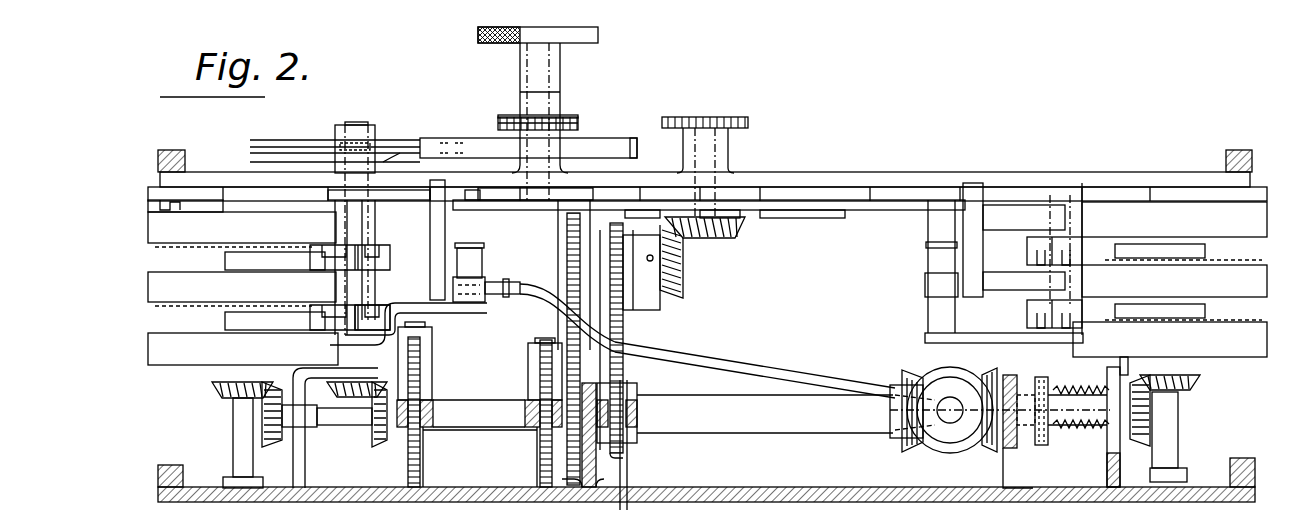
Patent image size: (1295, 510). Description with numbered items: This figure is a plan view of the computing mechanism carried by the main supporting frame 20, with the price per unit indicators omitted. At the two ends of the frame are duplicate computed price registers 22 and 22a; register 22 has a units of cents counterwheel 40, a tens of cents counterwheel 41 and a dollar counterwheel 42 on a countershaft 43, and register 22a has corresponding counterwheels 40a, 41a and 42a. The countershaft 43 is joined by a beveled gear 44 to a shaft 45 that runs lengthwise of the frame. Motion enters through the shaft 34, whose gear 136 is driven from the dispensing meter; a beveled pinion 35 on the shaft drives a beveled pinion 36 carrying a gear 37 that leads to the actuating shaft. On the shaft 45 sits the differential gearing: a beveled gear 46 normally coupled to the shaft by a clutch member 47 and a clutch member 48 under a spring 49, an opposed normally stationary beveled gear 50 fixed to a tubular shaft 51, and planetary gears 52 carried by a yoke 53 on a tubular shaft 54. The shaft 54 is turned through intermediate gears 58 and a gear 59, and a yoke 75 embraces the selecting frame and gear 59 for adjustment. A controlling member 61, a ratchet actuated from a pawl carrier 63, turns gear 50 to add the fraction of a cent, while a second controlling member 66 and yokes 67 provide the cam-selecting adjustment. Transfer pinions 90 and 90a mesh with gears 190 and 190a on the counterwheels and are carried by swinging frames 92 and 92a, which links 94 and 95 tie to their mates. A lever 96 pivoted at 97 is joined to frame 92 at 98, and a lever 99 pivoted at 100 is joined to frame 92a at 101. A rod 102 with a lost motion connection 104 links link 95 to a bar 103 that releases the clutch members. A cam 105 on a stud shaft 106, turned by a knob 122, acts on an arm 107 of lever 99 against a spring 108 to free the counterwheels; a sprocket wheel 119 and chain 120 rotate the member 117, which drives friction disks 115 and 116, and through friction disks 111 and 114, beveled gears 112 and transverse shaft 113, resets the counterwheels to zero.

The main supporting frame 20 is at (850, 173).
The computed price register 22 is at (1240, 362).
The computed price register 22a is at (192, 366).
The shaft 34 is at (728, 153).
The beveled pinion 35 is at (735, 237).
The beveled pinion 36 is at (682, 292).
The gear 37 is at (567, 226).
The counterwheel 40 is at (1267, 357).
The counterwheel 40a is at (148, 212).
The counterwheel 41 is at (1262, 270).
The counterwheel 41a is at (150, 290).
The counterwheel 42 is at (1262, 210).
The counterwheel 42a is at (150, 340).
The countershaft 43 is at (237, 447).
The beveled gear 44 is at (262, 405).
The shaft 45 is at (332, 426).
The beveled gear 46 is at (985, 452).
The clutch member 47 is at (1008, 375).
The clutch member 48 is at (1040, 377).
The spring 49 is at (1095, 430).
The beveled gear 50 is at (898, 404).
The tubular shaft 51 is at (482, 412).
The planetary gears 52 is at (948, 368).
The yoke 53 is at (890, 438).
The tubular shaft 54 is at (765, 414).
The intermediate gears 58 is at (623, 300).
The gear 59 is at (628, 453).
The controlling member 61 is at (528, 355).
The pawl carrier 63 is at (424, 455).
The controlling member 66 is at (420, 371).
The yoke 67 is at (433, 383).
The yoke 75 is at (637, 412).
The transfer pinions 90 is at (1027, 314).
The transfer pinions 90a is at (385, 308).
The swinging frame 92 is at (925, 338).
The swinging frame 92a is at (455, 315).
The link 94 is at (925, 288).
The link 95 is at (485, 302).
The lever 96 is at (845, 211).
The pivot 97 is at (782, 211).
The connection 98 is at (928, 308).
The lever 99 is at (456, 240).
The pivot 100 is at (643, 210).
The pivotal connection 101 is at (483, 264).
The rod 102 is at (762, 368).
The bar 103 is at (1060, 378).
The lost motion connection 104 is at (512, 287).
The cam 105 is at (588, 187).
The stud shaft 106 is at (555, 70).
The arm 107 is at (478, 188).
The spring 108 is at (475, 250).
The friction disk 111 is at (332, 145).
The beveled gears 112 is at (352, 398).
The transverse shaft 113 is at (345, 356).
The friction disk 114 is at (400, 152).
The friction disk 115 is at (252, 144).
The friction disk 116 is at (252, 157).
The rotatable member 117 is at (648, 129).
The sprocket wheel 119 is at (580, 123).
The sprocket chain 120 is at (497, 122).
The knob 122 is at (500, 44).
The gear 136 is at (749, 120).
The gears 190 is at (1242, 322).
The gears 190a is at (228, 258).